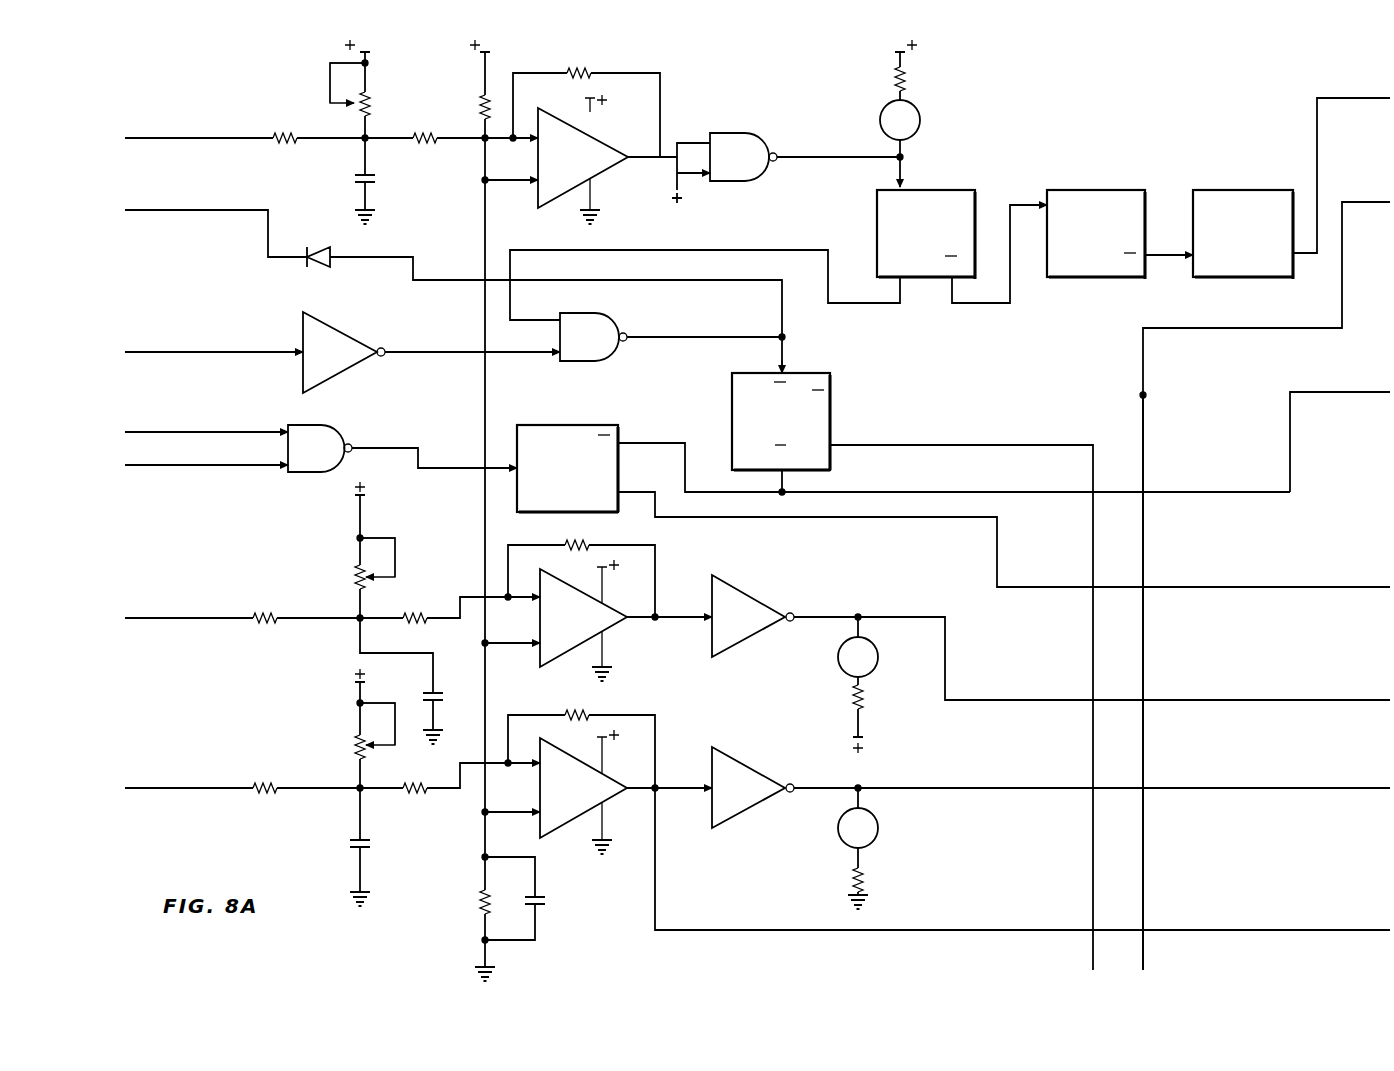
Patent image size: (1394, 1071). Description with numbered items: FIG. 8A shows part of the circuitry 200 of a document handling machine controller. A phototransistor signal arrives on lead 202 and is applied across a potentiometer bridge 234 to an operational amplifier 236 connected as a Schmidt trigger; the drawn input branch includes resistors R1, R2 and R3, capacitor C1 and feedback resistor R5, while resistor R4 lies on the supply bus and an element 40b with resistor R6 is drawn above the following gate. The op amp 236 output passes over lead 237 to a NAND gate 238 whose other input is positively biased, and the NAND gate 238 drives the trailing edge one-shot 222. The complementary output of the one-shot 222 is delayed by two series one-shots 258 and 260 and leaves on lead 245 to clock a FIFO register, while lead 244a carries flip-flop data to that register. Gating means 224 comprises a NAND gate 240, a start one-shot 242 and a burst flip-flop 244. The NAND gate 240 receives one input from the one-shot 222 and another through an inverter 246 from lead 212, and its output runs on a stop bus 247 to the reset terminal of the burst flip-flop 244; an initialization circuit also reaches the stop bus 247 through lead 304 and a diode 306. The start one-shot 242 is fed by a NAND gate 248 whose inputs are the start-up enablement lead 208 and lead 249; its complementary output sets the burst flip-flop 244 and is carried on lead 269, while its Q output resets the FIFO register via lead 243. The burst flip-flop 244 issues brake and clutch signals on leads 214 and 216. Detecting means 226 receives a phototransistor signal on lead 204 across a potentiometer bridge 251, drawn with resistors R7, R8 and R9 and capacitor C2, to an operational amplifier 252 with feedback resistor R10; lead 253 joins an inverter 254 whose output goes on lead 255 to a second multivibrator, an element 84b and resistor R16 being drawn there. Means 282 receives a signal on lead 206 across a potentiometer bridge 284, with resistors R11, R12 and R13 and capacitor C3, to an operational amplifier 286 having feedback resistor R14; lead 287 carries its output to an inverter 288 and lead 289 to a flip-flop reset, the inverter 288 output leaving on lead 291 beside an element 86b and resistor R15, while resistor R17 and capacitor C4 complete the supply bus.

The circuitry 200 is at (298, 82).
The potentiometer bridge 234 is at (375, 79).
The resistor R2 is at (370, 103).
The resistor R1 is at (280, 134).
The lead 202 is at (182, 134).
The capacitor C1 is at (353, 176).
The resistor R3 is at (432, 145).
The resistor R4 is at (482, 114).
The resistor R5 is at (575, 72).
The operational amplifier 236 is at (590, 172).
The lead 237 is at (685, 143).
The NAND gate 238 is at (744, 133).
The resistor R6 is at (896, 81).
The lamp 40b is at (918, 114).
The trailing edge one-shot 222 is at (877, 222).
The one-shot 258 is at (1064, 188).
The one-shot 260 is at (1212, 188).
The lead 245 is at (1350, 108).
The lead 244a is at (1373, 202).
The gating means 224 is at (682, 243).
The lead 304 is at (178, 228).
The diode 306 is at (321, 270).
The lead 212 is at (189, 350).
The inverter 246 is at (340, 332).
The NAND gate 240 is at (601, 315).
The stop bus 247 is at (789, 322).
The burst flip-flop 244 is at (830, 381).
The lead 208 is at (200, 428).
The lead 249 is at (180, 480).
The NAND gate 248 is at (292, 473).
The start one-shot 242 is at (604, 424).
The lead 269 is at (1340, 410).
The lead 214 is at (1010, 441).
The lead 216 is at (1143, 955).
The lead 243 is at (713, 520).
The lead 255 is at (1330, 700).
The resistor R8 is at (358, 572).
The potentiometer bridge 251 is at (410, 554).
The lead 204 is at (165, 618).
The resistor R7 is at (266, 616).
The resistor R9 is at (416, 615).
The capacitor C2 is at (438, 688).
The operational amplifier 252 is at (606, 640).
The resistor R10 is at (566, 538).
The lead 253 is at (681, 624).
The inverter 254 is at (752, 636).
The detecting means 226 is at (787, 580).
The lamp 84b is at (878, 642).
The resistor R16 is at (872, 696).
The resistor R12 is at (356, 748).
The potentiometer bridge 284 is at (332, 716).
The lead 206 is at (177, 786).
The resistor R11 is at (266, 784).
The resistor R13 is at (420, 794).
The capacitor C3 is at (359, 836).
The operational amplifier 286 is at (552, 833).
The resistor R14 is at (566, 700).
The lead 287 is at (681, 798).
The inverter 288 is at (775, 762).
The lead 291 is at (1278, 786).
The means for detecting the presence of documents 282 is at (887, 775).
The lamp 86b is at (878, 822).
The resistor R15 is at (872, 878).
The lead 289 is at (718, 930).
The resistor R17 is at (482, 900).
The capacitor C4 is at (546, 885).